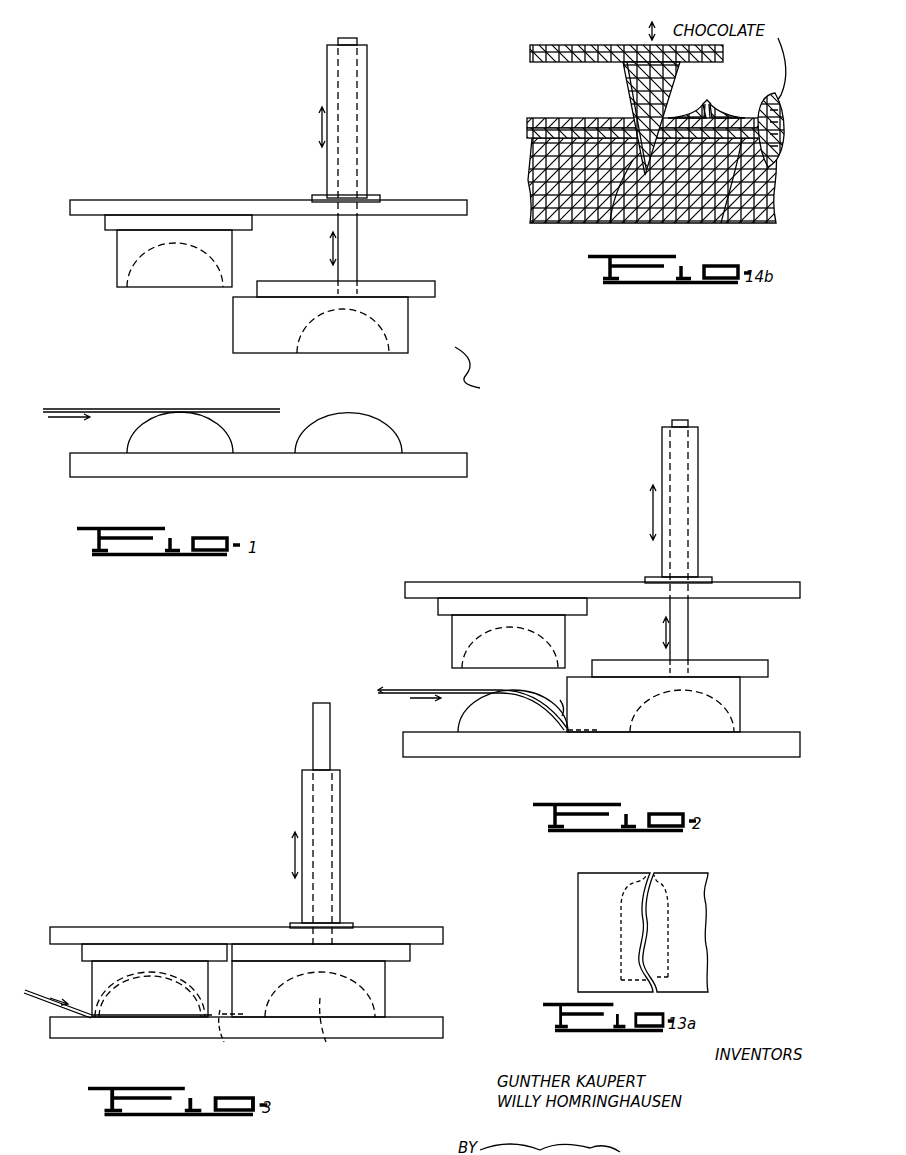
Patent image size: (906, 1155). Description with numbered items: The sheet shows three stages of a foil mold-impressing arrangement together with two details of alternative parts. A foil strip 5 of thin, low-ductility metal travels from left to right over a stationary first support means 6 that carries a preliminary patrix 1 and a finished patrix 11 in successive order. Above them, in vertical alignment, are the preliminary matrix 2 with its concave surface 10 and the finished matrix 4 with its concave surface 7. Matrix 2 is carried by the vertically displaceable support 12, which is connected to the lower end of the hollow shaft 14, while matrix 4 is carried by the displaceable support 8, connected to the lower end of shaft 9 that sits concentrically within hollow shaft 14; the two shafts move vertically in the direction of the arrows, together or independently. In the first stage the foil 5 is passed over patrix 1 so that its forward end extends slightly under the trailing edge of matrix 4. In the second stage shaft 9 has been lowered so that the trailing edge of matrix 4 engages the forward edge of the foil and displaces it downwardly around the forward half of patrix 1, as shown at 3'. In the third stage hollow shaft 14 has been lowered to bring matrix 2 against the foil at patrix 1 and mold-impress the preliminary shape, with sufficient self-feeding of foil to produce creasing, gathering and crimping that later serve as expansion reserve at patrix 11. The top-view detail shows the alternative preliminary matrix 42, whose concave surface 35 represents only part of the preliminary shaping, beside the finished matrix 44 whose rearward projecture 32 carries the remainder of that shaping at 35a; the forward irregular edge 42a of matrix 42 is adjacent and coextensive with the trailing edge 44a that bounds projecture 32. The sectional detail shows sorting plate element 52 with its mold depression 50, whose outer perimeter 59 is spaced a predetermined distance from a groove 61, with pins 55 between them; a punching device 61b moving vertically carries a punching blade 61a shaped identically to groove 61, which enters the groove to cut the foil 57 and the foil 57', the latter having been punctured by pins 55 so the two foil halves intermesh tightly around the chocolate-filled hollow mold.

In FIG. 1, the preliminary patrix 1 is at (184, 438).
In FIG. 2, the preliminary patrix 1 is at (517, 721).
In FIG. 3, the preliminary patrix 1 is at (175, 1018).
In FIG. 1, the preliminary matrix 2 is at (140, 258).
In FIG. 2, the preliminary matrix 2 is at (515, 656).
In FIG. 3, the preliminary matrix 2 is at (155, 998).
In FIG. 2, the downwardly displaced foil portion 3' is at (555, 699).
In FIG. 1, the finished matrix 4 is at (285, 333).
In FIG. 2, the finished matrix 4 is at (613, 713).
In FIG. 3, the finished matrix 4 is at (257, 993).
In FIG. 1, the foil strip 5 is at (140, 407).
In FIG. 2, the foil strip 5 is at (428, 686).
In FIG. 3, the foil strip 5 is at (48, 1010).
In FIG. 1, the first support means 6 is at (275, 466).
In FIG. 2, the first support means 6 is at (601, 743).
In FIG. 3, the first support means 6 is at (422, 1026).
In FIG. 1, the concave surface 7 is at (382, 350).
In FIG. 2, the concave surface 7 is at (720, 713).
In FIG. 3, the concave surface 7 is at (360, 992).
In FIG. 1, the displaceable support 8 is at (435, 293).
In FIG. 2, the displaceable support 8 is at (750, 665).
In FIG. 3, the displaceable support 8 is at (405, 956).
In FIG. 1, the shaft 9 is at (357, 252).
In FIG. 2, the shaft 9 is at (688, 630).
In FIG. 3, the shaft 9 is at (330, 742).
In FIG. 1, the concave surface 10 is at (213, 287).
In FIG. 1, the finished patrix 11 is at (353, 440).
In FIG. 3, the finished patrix 11 is at (335, 1028).
In FIG. 1, the vertically displaceable support 12 is at (419, 205).
In FIG. 2, the vertically displaceable support 12 is at (747, 587).
In FIG. 3, the vertically displaceable support 12 is at (437, 935).
In FIG. 1, the hollow shaft 14 is at (367, 103).
In FIG. 2, the hollow shaft 14 is at (699, 505).
In FIG. 3, the hollow shaft 14 is at (348, 827).
In FIG. 13A, the preliminary matrix portion or projecture 32 is at (650, 950).
In FIG. 13A, the preliminary concave surface 35 is at (622, 930).
In FIG. 13A, the remainder of preliminary shaping 35a is at (667, 921).
In FIG. 13A, the preliminary matrix 42 is at (590, 986).
In FIG. 13A, the forward irregular edge 42a is at (616, 927).
In FIG. 13A, the finished matrix 44 is at (702, 979).
In FIG. 13A, the trailing edge 44a is at (678, 926).
In FIG. 14B, the mold depression 50 is at (776, 192).
In FIG. 14B, the sorting plate element 52 is at (540, 163).
In FIG. 14B, the pins 55 is at (708, 106).
In FIG. 14B, the foil 57 is at (624, 129).
In FIG. 14B, the foil 57' is at (625, 113).
In FIG. 14B, the outer perimeter 59 is at (721, 192).
In FIG. 14B, the groove 61 is at (616, 203).
In FIG. 14B, the punching blade 61a is at (637, 97).
In FIG. 14B, the punching device 61b is at (545, 45).